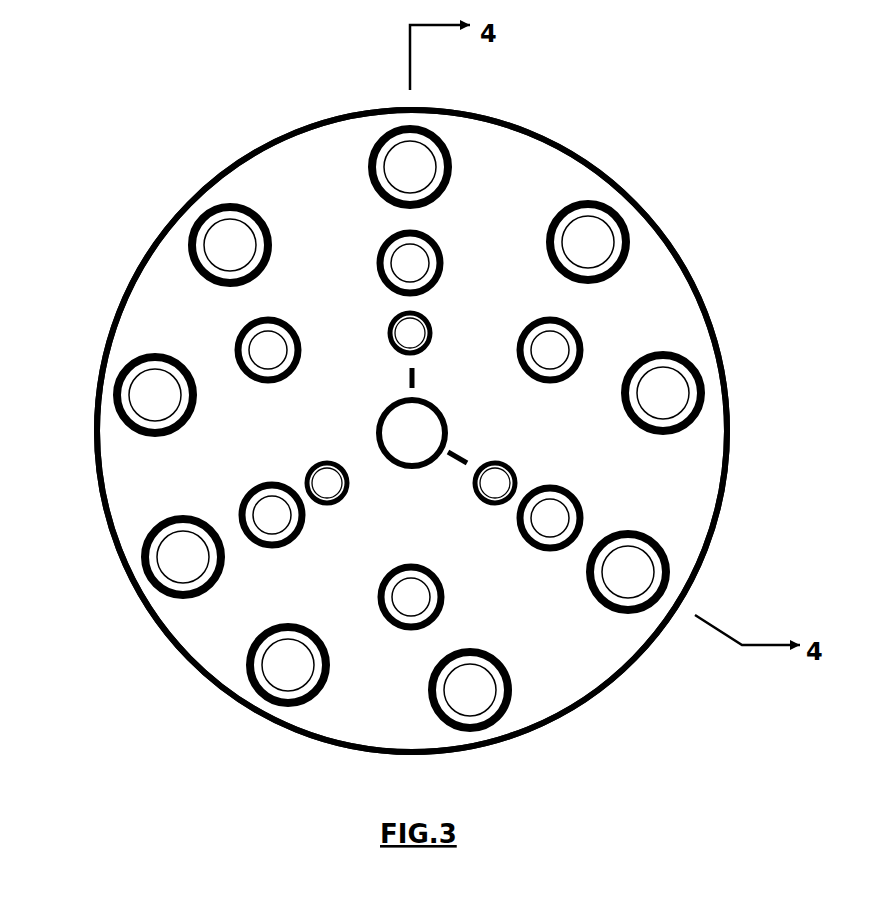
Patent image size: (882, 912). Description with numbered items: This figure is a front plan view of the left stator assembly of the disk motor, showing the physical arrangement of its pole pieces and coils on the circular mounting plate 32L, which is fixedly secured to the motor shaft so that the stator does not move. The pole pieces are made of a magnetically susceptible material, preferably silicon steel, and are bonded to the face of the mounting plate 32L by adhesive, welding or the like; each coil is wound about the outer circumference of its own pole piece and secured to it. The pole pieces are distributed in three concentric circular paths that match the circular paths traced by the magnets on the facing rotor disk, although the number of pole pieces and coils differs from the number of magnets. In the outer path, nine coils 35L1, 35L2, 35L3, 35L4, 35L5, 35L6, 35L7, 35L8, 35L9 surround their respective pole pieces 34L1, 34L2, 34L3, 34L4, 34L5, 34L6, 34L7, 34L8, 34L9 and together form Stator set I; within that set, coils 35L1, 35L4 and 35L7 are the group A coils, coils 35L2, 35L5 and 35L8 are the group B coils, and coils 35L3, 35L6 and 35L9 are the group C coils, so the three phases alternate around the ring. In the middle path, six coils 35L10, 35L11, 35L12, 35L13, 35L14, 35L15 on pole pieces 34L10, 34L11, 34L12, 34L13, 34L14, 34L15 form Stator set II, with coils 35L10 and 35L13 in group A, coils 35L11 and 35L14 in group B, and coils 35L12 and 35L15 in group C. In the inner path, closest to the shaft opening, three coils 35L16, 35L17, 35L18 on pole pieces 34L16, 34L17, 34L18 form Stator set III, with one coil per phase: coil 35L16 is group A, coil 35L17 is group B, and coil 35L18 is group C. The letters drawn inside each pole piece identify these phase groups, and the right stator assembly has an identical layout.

The mounting plate 32L is at (510, 165).
The coil 35L1 is at (378, 137).
The pole piece 34L1 is at (420, 165).
The coil 35L2 is at (620, 212).
The pole piece 34L2 is at (598, 241).
The coil 35L3 is at (688, 360).
The pole piece 34L3 is at (670, 395).
The coil 35L4 is at (673, 577).
The pole piece 34L4 is at (635, 568).
The coil 35L5 is at (505, 657).
The pole piece 34L5 is at (475, 697).
The coil 35L6 is at (281, 707).
The pole piece 34L6 is at (280, 668).
The coil 35L7 is at (141, 565).
The pole piece 34L7 is at (186, 566).
The coil 35L8 is at (117, 398).
The pole piece 34L8 is at (157, 402).
The coil 35L9 is at (185, 245).
The pole piece 34L9 is at (228, 243).
The coil 35L10 is at (436, 240).
The pole piece 34L10 is at (405, 260).
The coil 35L11 is at (573, 326).
The pole piece 34L11 is at (555, 350).
The coil 35L12 is at (563, 485).
The pole piece 34L12 is at (553, 513).
The coil 35L13 is at (410, 632).
The pole piece 34L13 is at (414, 598).
The coil 35L14 is at (254, 486).
The pole piece 34L14 is at (277, 520).
The coil 35L15 is at (328, 309).
The pole piece 34L15 is at (272, 353).
The coil 35L16 is at (432, 316).
The pole piece 34L16 is at (413, 338).
The coil 35L17 is at (492, 505).
The pole piece 34L17 is at (497, 483).
The coil 35L18 is at (342, 498).
The pole piece 34L18 is at (327, 482).